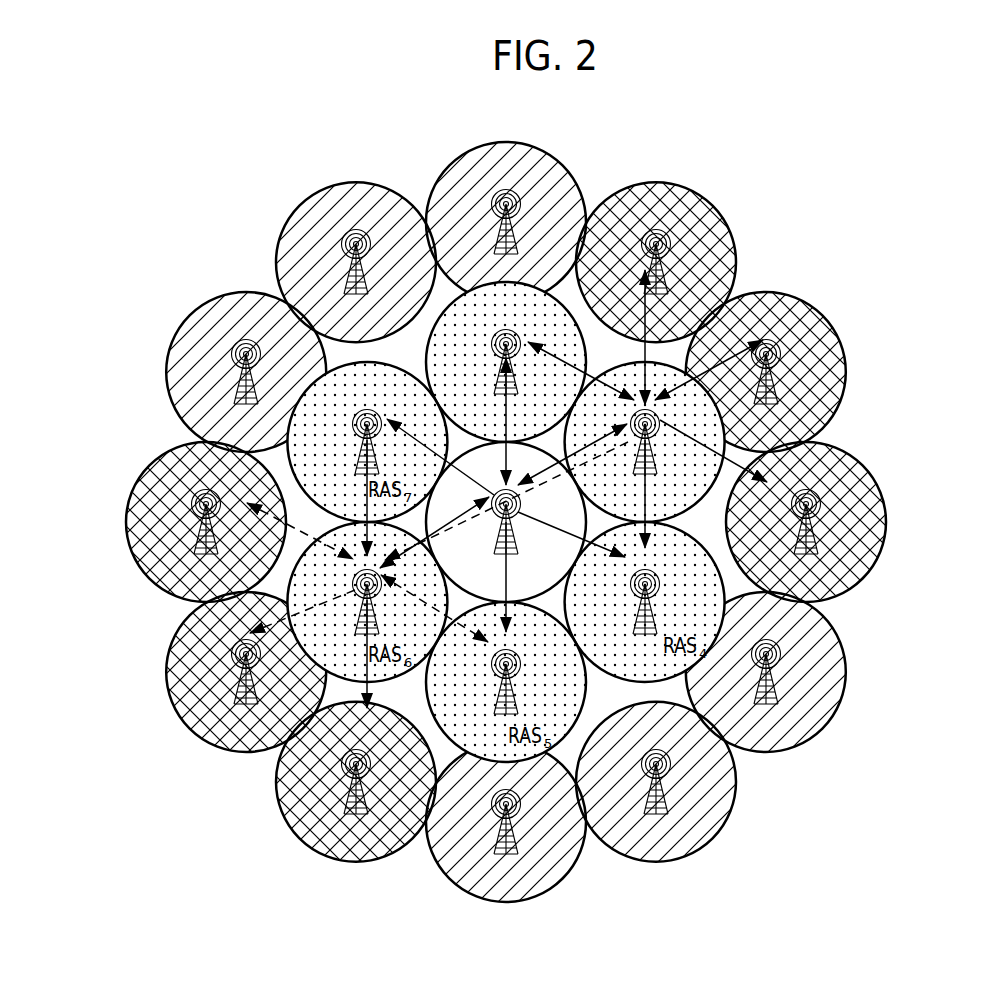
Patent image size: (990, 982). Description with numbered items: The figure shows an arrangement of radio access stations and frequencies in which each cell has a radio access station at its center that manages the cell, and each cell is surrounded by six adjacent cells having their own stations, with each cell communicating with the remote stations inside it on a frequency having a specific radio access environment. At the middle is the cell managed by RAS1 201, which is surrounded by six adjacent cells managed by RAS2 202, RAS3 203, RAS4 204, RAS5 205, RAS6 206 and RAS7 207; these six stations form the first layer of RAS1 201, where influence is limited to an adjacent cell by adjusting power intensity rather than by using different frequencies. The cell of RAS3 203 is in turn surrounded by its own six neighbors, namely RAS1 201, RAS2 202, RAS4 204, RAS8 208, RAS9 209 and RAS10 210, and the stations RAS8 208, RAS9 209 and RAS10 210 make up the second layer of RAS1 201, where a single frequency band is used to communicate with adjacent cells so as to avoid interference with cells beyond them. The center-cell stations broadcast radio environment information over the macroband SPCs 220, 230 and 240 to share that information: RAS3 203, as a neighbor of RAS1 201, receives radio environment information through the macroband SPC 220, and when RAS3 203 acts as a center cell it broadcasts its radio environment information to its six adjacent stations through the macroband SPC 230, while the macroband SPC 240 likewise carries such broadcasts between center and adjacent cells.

The RAS1 201 is at (562, 560).
The RAS2 202 is at (452, 317).
The RAS3 203 is at (710, 492).
The RAS4 204 is at (622, 672).
The RAS5 205 is at (497, 752).
The RAS6 206 is at (320, 668).
The RAS7 207 is at (315, 397).
The RAS8 208 is at (680, 198).
The RAS9 209 is at (780, 302).
The RAS10 210 is at (855, 470).
The macroband SPC 220 is at (423, 452).
The macroband SPC 230 is at (552, 360).
The macroband SPC 240 is at (267, 512).